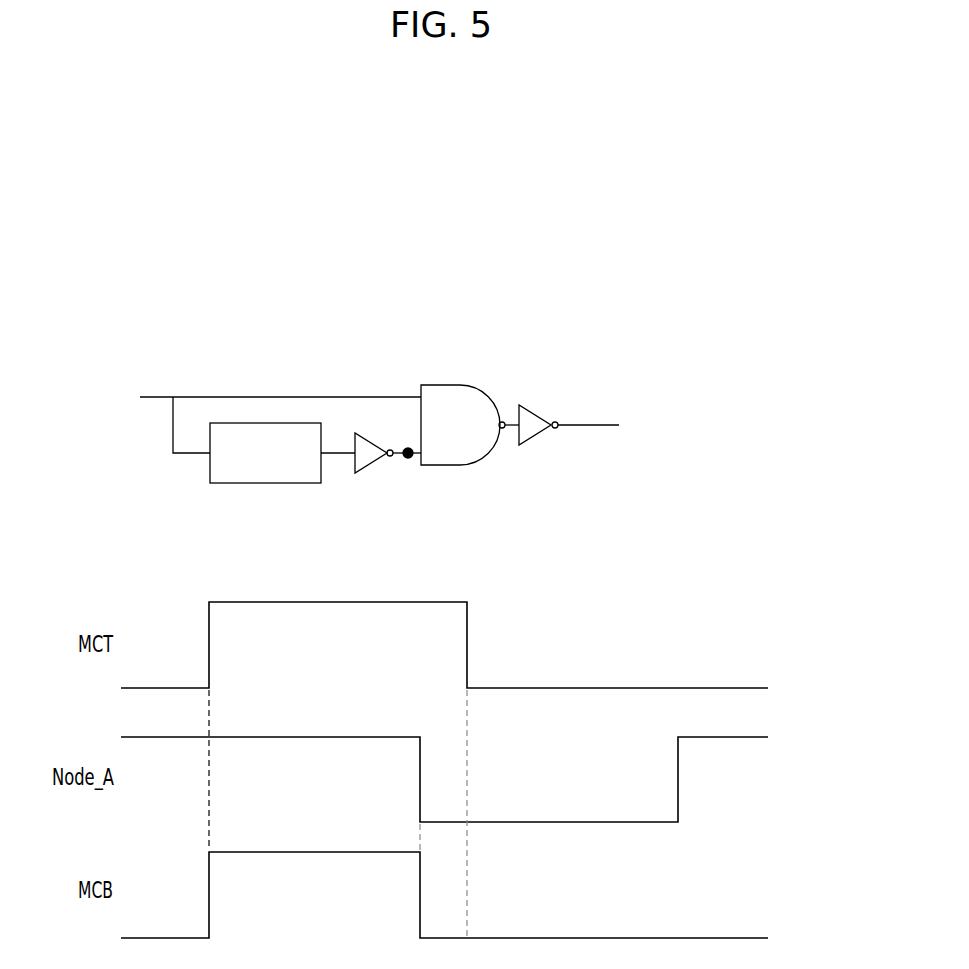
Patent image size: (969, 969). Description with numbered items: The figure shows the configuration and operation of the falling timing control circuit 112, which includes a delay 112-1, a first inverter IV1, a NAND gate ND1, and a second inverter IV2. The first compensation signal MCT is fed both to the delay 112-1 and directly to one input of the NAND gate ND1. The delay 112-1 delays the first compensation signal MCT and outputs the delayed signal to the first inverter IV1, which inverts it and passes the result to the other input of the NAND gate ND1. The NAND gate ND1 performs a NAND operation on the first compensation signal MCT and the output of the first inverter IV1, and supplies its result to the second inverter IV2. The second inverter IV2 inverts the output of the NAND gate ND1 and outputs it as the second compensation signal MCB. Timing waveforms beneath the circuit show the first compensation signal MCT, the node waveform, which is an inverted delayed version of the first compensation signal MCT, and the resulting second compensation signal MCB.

The falling timing control circuit 112 is at (598, 297).
The delay 112-1 is at (288, 483).
The first inverter IV1 is at (372, 473).
The second inverter IV2 is at (537, 445).
The NAND gate ND1 is at (458, 465).
The first compensation signal MCT is at (259, 396).
The second compensation signal MCB is at (609, 424).